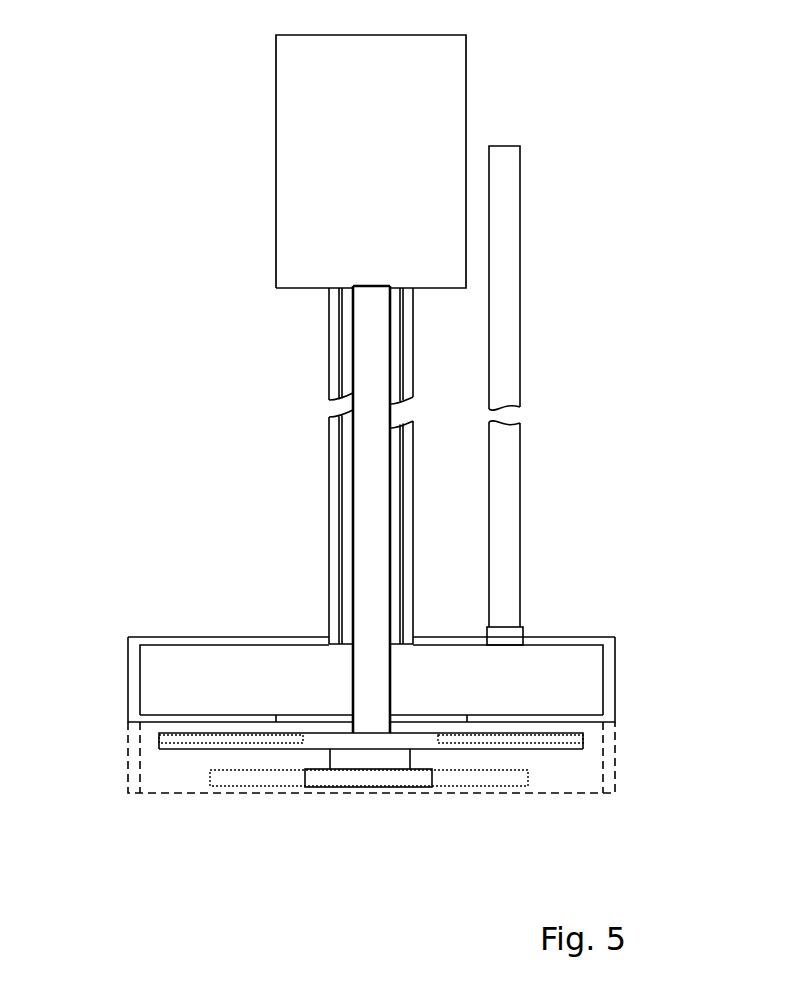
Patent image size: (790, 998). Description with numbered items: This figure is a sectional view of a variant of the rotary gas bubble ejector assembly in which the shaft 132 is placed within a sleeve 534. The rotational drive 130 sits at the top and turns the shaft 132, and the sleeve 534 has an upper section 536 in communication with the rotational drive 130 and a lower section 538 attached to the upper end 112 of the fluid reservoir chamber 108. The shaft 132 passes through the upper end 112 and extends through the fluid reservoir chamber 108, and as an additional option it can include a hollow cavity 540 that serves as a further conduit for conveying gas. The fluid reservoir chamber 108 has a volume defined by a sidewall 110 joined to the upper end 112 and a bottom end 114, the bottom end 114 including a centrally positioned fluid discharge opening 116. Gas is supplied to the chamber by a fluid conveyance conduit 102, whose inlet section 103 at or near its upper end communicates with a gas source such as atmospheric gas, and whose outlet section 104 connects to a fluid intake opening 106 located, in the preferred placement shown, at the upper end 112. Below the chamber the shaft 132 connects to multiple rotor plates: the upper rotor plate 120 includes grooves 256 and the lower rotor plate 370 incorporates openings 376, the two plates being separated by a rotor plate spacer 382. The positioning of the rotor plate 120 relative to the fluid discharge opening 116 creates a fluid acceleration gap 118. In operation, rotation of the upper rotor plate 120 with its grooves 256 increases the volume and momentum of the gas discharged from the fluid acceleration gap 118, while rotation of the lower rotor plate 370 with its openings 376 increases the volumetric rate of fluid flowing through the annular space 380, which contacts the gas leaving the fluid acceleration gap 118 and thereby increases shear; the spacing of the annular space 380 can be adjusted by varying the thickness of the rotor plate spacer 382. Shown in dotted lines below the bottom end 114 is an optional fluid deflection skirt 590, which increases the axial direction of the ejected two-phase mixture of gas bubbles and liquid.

The rotational drive 130 is at (276, 141).
The shaft 132 is at (352, 352).
The hollow cavity 540 is at (370, 585).
The sleeve 534 is at (333, 485).
The upper section 536 is at (413, 297).
The lower section 538 is at (414, 630).
The inlet section 103 is at (505, 163).
The fluid conveyance conduit 102 is at (520, 367).
The outlet section 104 is at (522, 605).
The fluid intake opening 106 is at (508, 633).
The sidewall 110 is at (615, 682).
The upper end 112 is at (167, 638).
The fluid reservoir chamber 108 is at (250, 670).
The bottom end 114 is at (210, 712).
The fluid discharge opening 116 is at (334, 721).
The fluid acceleration gap 118 is at (590, 735).
The rotor plate 120 is at (159, 749).
The grooves 256 is at (203, 739).
The annular space 380 is at (488, 760).
The rotor plate spacer 382 is at (401, 757).
The lower rotor plate 370 is at (528, 778).
The openings 376 is at (258, 775).
The fluid deflection skirt 590 is at (128, 797).